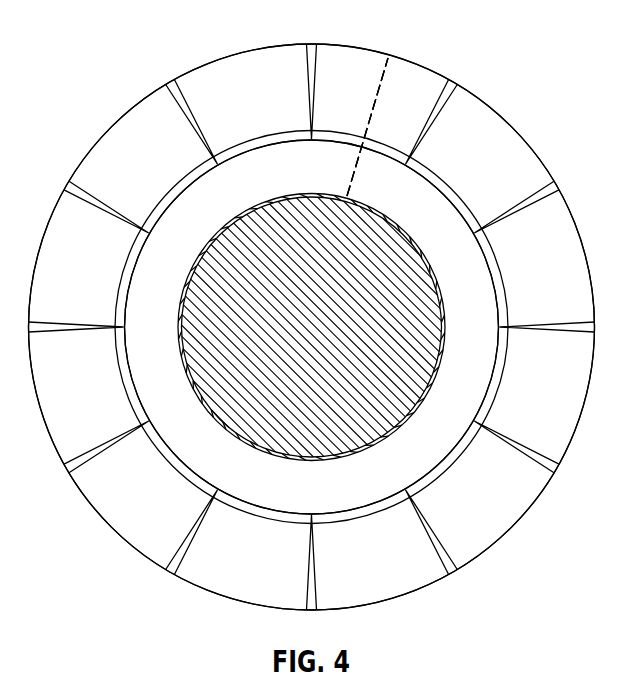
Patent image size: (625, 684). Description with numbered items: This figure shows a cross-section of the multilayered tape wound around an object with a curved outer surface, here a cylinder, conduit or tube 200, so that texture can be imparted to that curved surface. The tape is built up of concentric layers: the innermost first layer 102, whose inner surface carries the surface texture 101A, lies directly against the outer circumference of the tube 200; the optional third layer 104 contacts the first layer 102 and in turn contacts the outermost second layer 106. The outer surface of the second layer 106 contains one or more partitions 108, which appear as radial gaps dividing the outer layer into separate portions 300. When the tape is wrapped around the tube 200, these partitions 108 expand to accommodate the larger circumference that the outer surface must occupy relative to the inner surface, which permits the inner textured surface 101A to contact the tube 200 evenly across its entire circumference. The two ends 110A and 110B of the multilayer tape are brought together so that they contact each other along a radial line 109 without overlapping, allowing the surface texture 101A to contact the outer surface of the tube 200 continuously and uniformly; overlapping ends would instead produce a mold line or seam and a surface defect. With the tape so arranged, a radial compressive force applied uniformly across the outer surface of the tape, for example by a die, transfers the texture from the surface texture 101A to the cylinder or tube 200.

The surface texture 101A is at (365, 438).
The first layer 102 is at (485, 369).
The third layer 104 is at (437, 181).
The second layer 106 is at (502, 115).
The partitions 108 is at (311, 47).
The radial line / seam 109 is at (368, 128).
The end of the multilayer tape 110A is at (380, 88).
The end of the multilayer tape 110B is at (372, 112).
The tube 200 is at (247, 418).
The segment of outer ring 300 is at (107, 130).